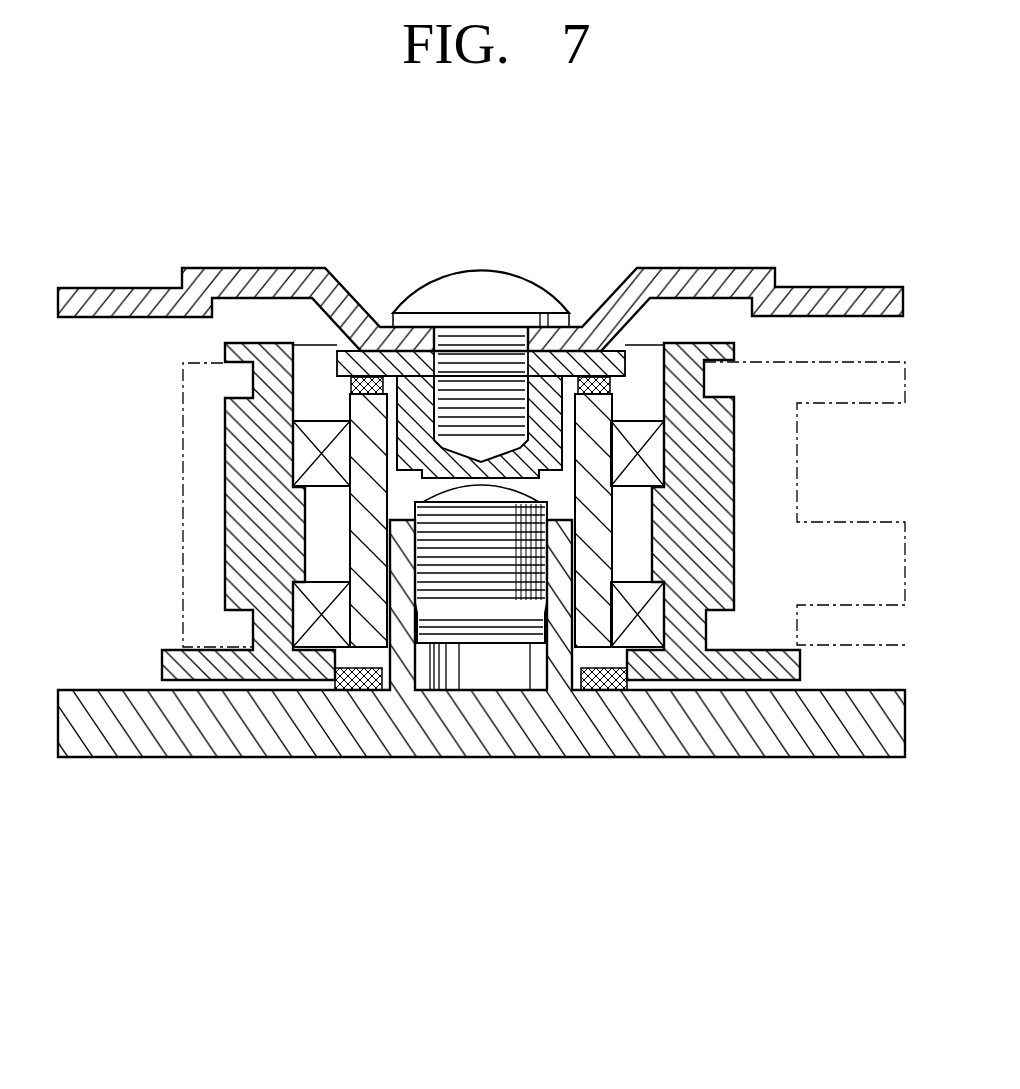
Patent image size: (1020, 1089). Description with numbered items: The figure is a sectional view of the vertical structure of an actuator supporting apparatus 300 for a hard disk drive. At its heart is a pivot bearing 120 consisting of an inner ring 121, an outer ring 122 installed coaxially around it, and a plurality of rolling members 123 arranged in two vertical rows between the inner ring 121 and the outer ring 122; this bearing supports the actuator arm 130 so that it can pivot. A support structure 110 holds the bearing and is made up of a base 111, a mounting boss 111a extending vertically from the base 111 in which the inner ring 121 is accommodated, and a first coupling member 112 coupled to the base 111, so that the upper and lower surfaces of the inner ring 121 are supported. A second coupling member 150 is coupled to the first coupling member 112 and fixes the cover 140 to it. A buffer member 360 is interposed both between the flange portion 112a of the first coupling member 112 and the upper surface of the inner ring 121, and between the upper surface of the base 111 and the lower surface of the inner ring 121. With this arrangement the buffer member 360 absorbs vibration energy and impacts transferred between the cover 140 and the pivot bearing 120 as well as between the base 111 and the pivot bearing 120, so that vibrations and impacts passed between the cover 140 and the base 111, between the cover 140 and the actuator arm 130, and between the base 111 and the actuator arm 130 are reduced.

The support structure 110 is at (552, 863).
The base 111 is at (550, 745).
The mounting boss 111a is at (557, 625).
The first coupling member 112 is at (473, 485).
The flange portion 112a is at (378, 326).
The pivot bearing 120 is at (383, 840).
The inner ring 121 is at (358, 648).
The outer ring 122 is at (217, 670).
The rolling members 123 is at (297, 635).
The actuator arm 130 is at (812, 404).
The cover 140 is at (850, 287).
The second coupling member 150 is at (485, 270).
The actuator supporting apparatus 300 is at (145, 510).
The buffer member 360 is at (577, 277).